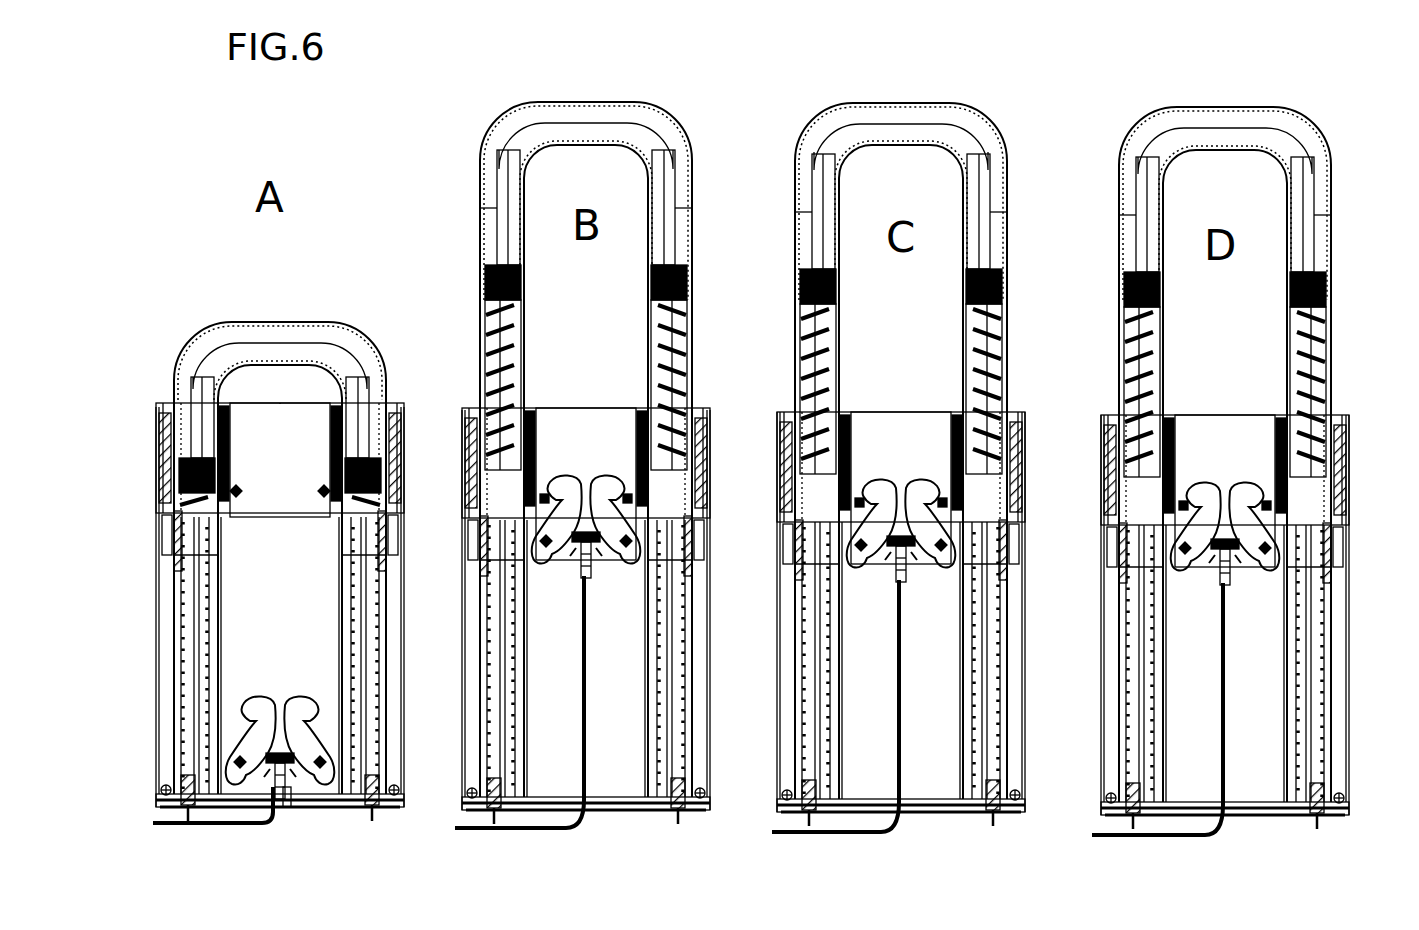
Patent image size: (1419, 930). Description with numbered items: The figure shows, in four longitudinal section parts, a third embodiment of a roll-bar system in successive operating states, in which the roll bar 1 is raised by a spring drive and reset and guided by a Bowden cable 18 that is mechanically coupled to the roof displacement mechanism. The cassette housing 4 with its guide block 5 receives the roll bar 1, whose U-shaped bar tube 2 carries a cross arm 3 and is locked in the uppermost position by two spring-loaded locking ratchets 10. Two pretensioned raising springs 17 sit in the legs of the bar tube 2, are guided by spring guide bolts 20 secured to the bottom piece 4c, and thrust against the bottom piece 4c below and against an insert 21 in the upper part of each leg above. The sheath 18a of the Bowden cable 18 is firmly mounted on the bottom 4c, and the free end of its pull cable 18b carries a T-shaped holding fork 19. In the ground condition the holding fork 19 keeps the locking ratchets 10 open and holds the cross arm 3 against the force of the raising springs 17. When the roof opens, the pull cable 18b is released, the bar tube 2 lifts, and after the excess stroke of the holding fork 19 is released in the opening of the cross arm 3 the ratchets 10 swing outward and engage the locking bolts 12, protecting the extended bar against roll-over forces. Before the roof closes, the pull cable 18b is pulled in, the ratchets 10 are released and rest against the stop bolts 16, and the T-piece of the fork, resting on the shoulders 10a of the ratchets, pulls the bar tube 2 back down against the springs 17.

The roll bar 1 is at (218, 306).
The U-shaped bar tube 2 is at (318, 355).
The cross arm 3 is at (290, 810).
The cassette housing 4 is at (150, 520).
The bottom piece of the cassette housing 4c is at (325, 812).
The guide block 5 is at (278, 490).
The locking ratchets 10 is at (258, 700).
The shoulders of the locking ratchets 10a is at (1195, 570).
The locking bolts 12 is at (545, 488).
The stop bolts 16 is at (875, 570).
The raising springs 17 is at (185, 650).
The Bowden cable 18 is at (222, 845).
The sheath of the Bowden cable 18a is at (200, 830).
The pull cable of the Bowden cable 18b is at (165, 828).
The T-shaped holding fork 19 is at (280, 705).
The spring guide bolts 20 is at (190, 578).
The insert 21 is at (190, 385).